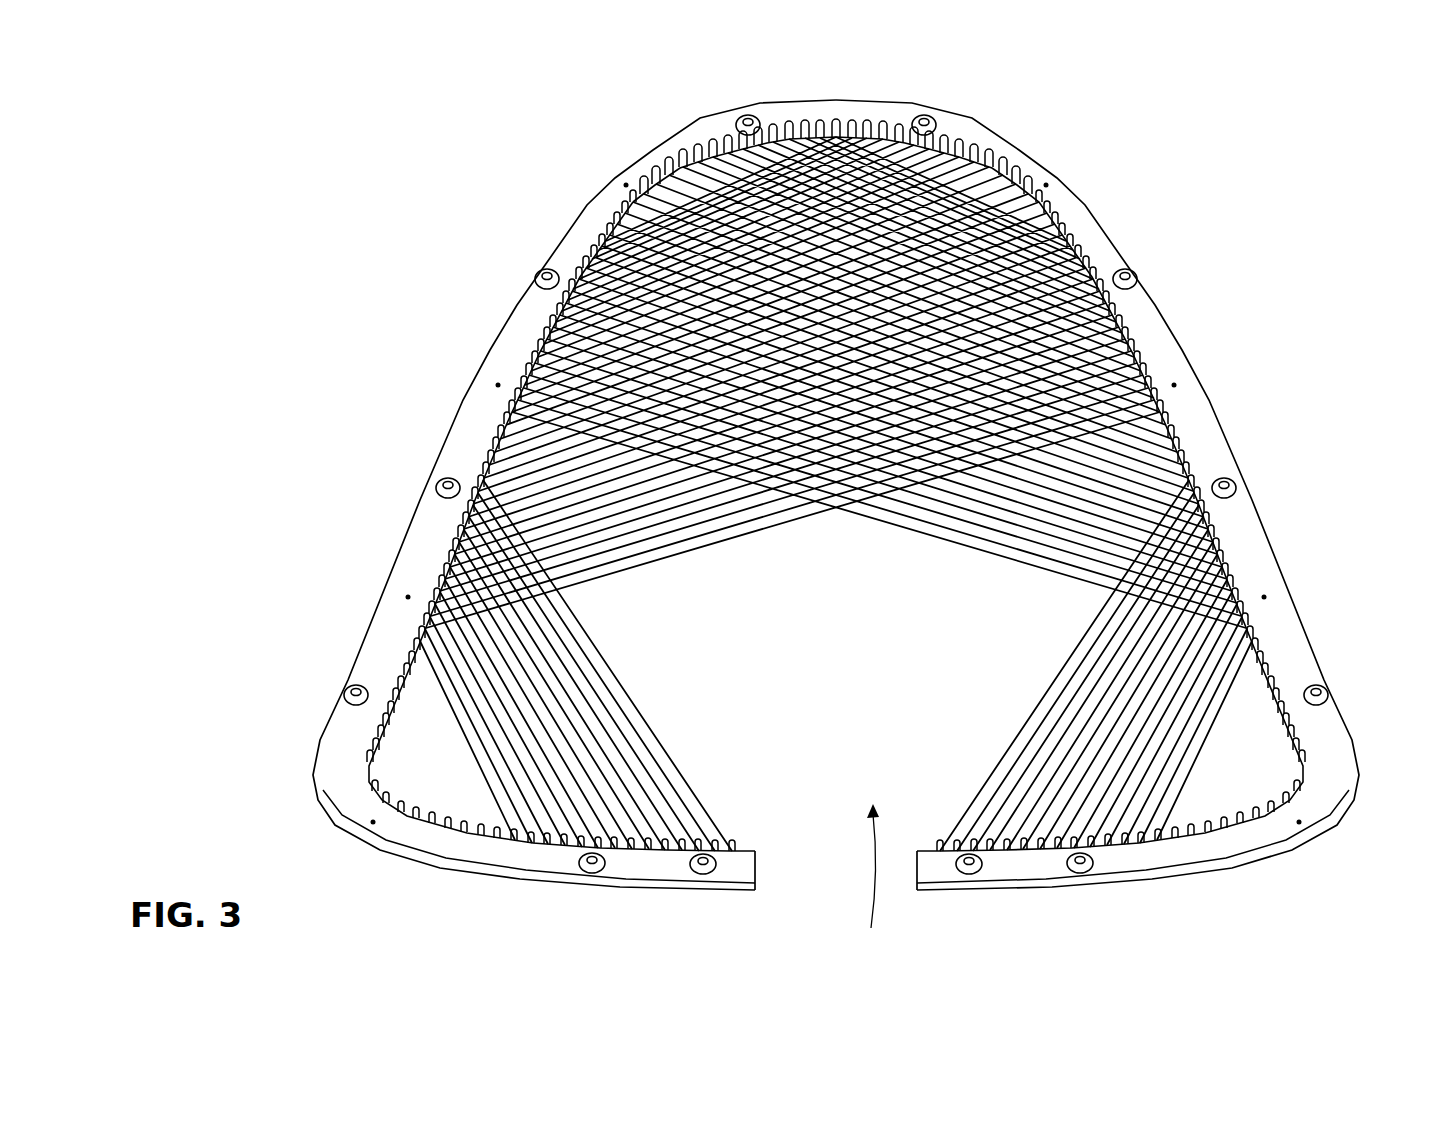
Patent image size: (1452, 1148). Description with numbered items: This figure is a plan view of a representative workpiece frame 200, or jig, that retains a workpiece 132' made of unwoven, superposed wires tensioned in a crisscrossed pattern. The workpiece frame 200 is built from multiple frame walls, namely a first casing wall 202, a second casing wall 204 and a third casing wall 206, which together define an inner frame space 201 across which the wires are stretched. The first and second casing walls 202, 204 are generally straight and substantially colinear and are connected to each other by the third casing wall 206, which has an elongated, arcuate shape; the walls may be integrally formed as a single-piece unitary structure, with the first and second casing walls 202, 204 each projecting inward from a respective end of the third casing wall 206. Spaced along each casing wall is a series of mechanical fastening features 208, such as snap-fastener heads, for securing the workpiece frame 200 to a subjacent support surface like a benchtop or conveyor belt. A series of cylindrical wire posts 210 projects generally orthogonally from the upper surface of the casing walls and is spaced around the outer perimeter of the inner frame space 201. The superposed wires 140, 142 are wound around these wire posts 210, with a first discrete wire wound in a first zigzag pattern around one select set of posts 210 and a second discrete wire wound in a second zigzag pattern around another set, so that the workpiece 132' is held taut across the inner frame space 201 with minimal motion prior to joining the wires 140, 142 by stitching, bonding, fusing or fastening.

The workpiece frame 200 is at (283, 87).
The inner frame space 201 is at (871, 876).
The first casing wall 202 is at (362, 842).
The second casing wall 204 is at (1312, 842).
The third casing wall 206 is at (713, 113).
The mechanical fastening features 208 is at (540, 275).
The wire posts 210 is at (837, 538).
The workpiece 132' is at (836, 338).
The first wire winding 140 is at (485, 485).
The second wire winding 142 is at (1188, 485).